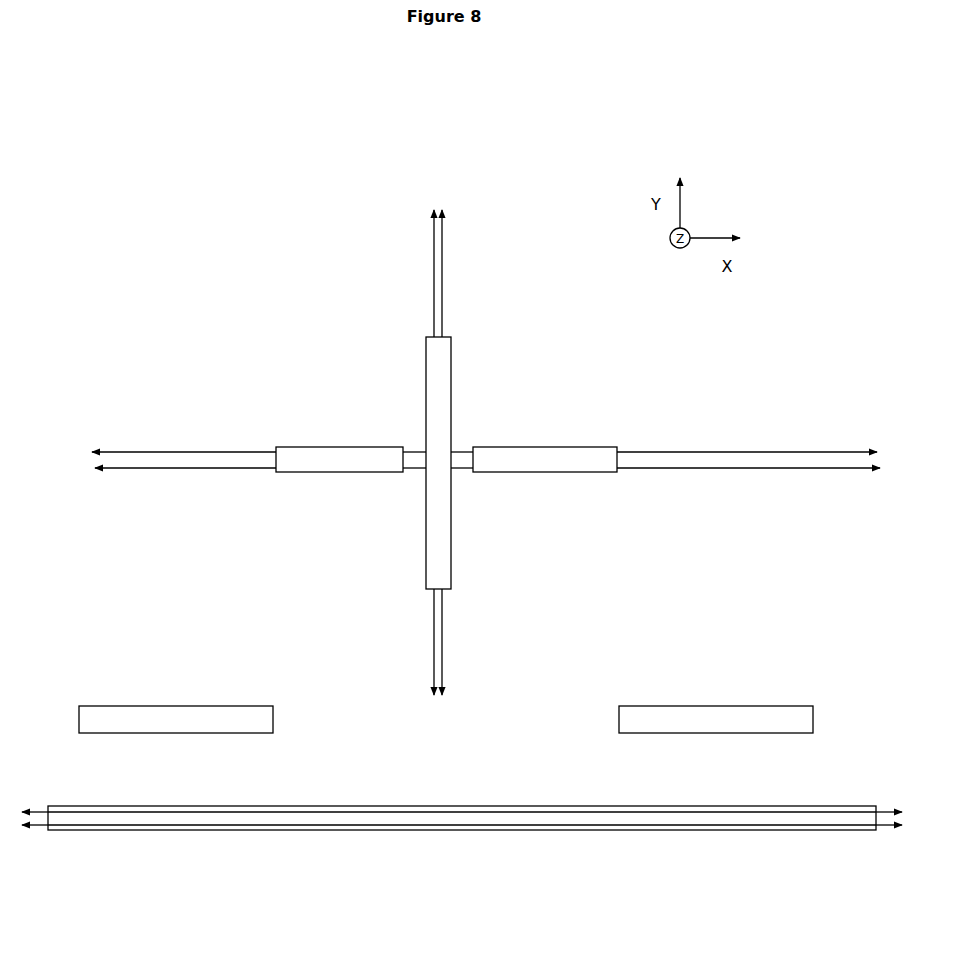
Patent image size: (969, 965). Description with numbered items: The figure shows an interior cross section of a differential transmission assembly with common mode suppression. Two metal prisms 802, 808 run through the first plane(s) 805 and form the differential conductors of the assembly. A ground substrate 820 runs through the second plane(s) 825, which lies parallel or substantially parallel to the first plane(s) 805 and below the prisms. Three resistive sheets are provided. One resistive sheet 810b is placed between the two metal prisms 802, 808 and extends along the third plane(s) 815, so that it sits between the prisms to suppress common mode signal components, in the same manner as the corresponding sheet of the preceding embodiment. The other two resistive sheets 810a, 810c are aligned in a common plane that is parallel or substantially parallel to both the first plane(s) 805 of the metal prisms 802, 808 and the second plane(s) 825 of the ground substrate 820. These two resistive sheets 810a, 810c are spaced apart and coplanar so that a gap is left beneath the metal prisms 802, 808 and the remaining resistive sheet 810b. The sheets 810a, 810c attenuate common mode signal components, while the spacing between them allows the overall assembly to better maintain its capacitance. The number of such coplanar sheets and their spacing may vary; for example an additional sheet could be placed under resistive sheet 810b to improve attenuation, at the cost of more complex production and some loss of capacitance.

The metal prism 802 is at (339, 412).
The first plane(s) 805 is at (842, 470).
The metal prism 808 is at (545, 416).
The resistive sheet 810a is at (176, 680).
The resistive sheet 810b is at (367, 463).
The resistive sheet 810c is at (716, 687).
The third plane(s) 815 is at (426, 298).
The ground substrate 820 is at (462, 848).
The second plane(s) 825 is at (895, 853).